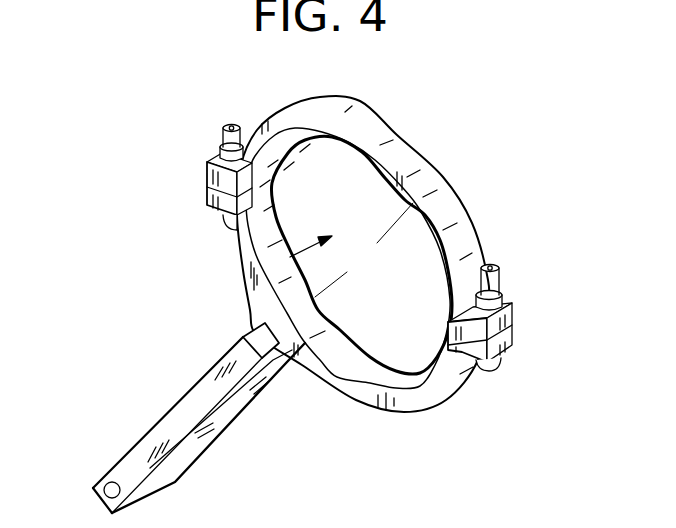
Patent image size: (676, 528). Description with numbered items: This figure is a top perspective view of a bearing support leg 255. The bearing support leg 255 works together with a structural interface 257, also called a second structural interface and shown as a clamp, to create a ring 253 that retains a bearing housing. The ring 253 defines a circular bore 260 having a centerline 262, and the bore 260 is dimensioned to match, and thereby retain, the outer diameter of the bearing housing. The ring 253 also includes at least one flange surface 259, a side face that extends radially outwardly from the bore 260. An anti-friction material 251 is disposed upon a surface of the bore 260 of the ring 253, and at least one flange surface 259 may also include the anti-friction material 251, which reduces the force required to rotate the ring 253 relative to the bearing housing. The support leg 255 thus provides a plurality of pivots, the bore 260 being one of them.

The anti-friction material 251 is at (244, 249).
The ring 253 is at (467, 195).
The bearing support leg 255 is at (163, 418).
The structural interface 257 is at (328, 137).
The flange surface 259 is at (385, 160).
The circular bore 260 is at (246, 289).
The centerline 262 is at (367, 247).